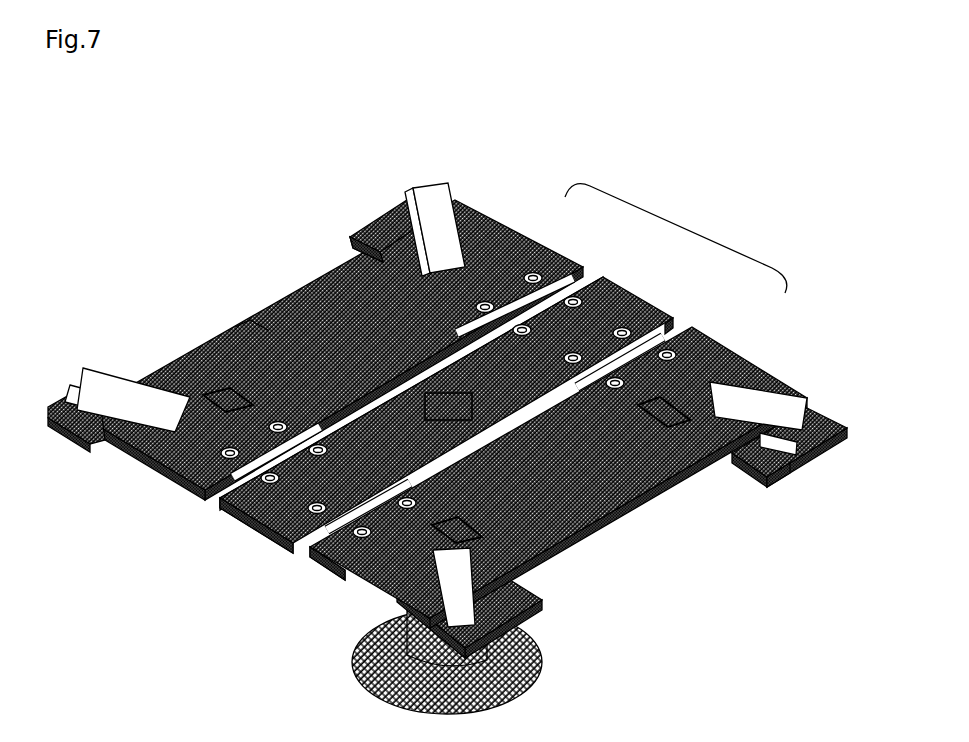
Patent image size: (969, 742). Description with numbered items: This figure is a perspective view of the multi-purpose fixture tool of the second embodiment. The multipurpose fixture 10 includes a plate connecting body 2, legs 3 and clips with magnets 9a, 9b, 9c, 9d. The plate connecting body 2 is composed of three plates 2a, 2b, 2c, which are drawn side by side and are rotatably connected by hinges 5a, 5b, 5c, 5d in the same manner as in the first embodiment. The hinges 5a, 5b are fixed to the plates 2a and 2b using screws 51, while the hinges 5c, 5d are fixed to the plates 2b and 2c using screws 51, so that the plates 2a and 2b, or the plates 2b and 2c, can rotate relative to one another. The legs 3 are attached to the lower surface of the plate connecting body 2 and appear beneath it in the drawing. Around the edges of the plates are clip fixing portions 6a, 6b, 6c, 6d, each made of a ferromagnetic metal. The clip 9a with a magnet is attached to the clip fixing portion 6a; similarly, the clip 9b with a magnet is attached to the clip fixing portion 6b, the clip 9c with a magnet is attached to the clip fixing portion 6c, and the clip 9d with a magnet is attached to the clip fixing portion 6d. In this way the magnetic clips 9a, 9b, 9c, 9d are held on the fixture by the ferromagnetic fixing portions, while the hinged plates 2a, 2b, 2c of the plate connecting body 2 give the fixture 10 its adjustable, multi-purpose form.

The multipurpose fixture 10 is at (795, 158).
The plate connecting body 2 is at (676, 238).
The plate 2a is at (522, 243).
The plate 2b is at (622, 292).
The plate 2c is at (720, 342).
The legs 3 is at (510, 668).
The hinge 5a is at (352, 232).
The hinge 5b is at (222, 505).
The hinge 5c is at (742, 486).
The hinge 5d is at (305, 553).
The clip fixing portion 6a is at (398, 212).
The clip fixing portion 6b is at (70, 435).
The clip fixing portion 6c is at (778, 490).
The clip fixing portion 6d is at (540, 612).
The clip with magnet 9a is at (440, 186).
The clip with magnet 9b is at (120, 366).
The clip with magnet 9c is at (812, 400).
The clip with magnet 9d is at (455, 572).
The screws 51 is at (215, 338).